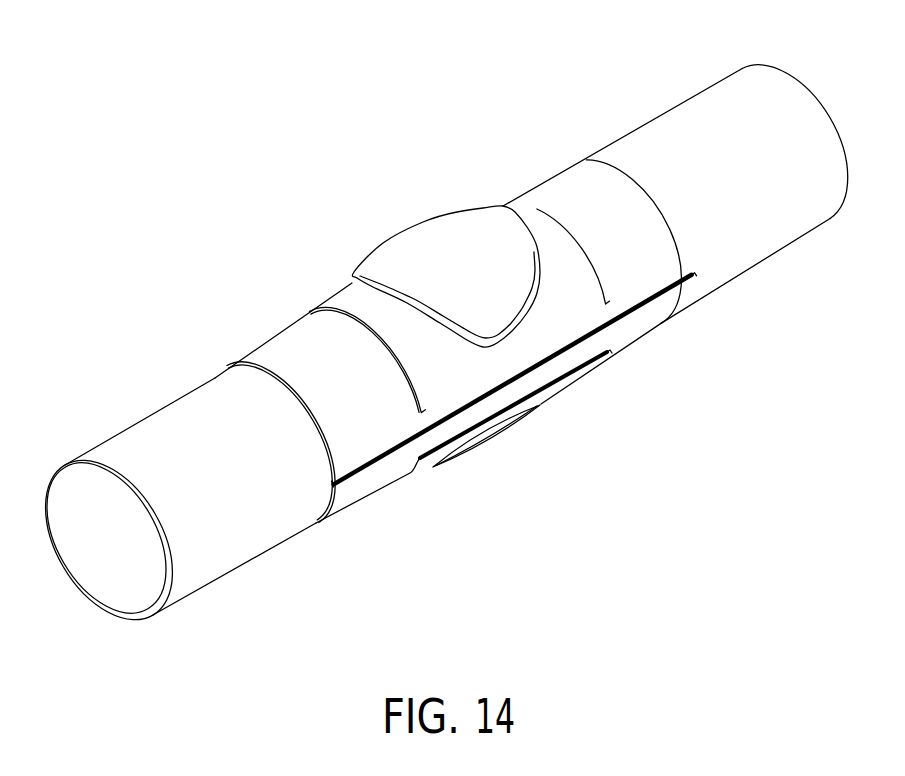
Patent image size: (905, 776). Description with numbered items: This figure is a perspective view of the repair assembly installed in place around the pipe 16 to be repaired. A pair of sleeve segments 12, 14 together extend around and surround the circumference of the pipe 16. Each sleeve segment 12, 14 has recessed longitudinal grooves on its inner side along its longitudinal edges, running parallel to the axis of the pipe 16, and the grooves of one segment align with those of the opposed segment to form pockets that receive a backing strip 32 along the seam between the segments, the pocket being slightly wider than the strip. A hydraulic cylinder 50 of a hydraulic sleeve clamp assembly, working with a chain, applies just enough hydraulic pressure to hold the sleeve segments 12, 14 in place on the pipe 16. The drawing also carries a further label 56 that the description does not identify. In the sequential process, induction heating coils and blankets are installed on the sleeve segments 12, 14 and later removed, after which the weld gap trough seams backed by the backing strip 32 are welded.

The sleeve segment 12 is at (277, 350).
The sleeve segment 14 is at (363, 491).
The pipe 16 is at (687, 113).
The backing strip 32 is at (330, 482).
The hydraulic cylinder 50 is at (421, 243).
The flange 56 is at (503, 203).